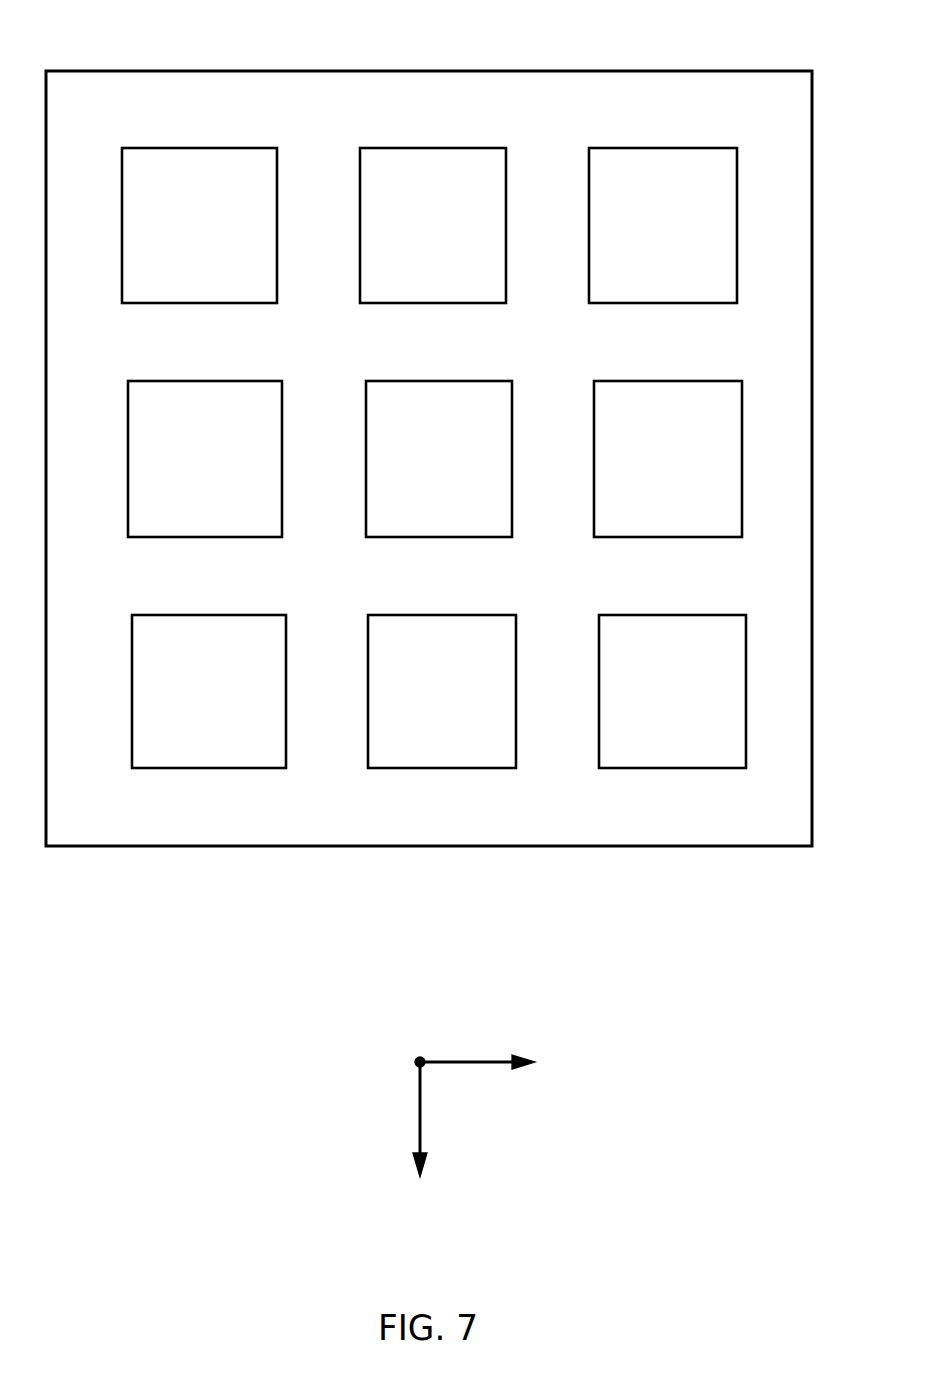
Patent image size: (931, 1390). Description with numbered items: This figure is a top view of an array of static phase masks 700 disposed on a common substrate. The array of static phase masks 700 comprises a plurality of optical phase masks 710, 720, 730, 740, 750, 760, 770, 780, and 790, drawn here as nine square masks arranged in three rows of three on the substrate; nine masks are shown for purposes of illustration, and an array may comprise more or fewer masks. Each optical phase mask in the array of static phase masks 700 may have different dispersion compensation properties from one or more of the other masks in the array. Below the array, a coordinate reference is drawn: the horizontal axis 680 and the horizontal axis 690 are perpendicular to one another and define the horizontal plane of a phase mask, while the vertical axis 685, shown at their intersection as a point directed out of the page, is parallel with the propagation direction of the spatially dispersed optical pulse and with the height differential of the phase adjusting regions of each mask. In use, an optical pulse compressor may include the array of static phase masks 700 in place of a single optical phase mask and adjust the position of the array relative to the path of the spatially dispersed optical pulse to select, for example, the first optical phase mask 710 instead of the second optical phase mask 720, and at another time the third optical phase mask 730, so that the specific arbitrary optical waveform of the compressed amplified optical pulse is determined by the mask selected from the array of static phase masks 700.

The array of static phase masks 700 is at (153, 71).
The optical phase mask 710 is at (177, 237).
The optical phase mask 720 is at (411, 237).
The optical phase mask 730 is at (640, 237).
The optical phase mask 740 is at (183, 472).
The optical phase mask 750 is at (415, 472).
The optical phase mask 760 is at (646, 472).
The optical phase mask 770 is at (186, 703).
The optical phase mask 780 is at (420, 703).
The optical phase mask 790 is at (651, 703).
The horizontal axis 680 is at (472, 1062).
The vertical axis 685 is at (419, 1057).
The horizontal axis 690 is at (419, 1127).